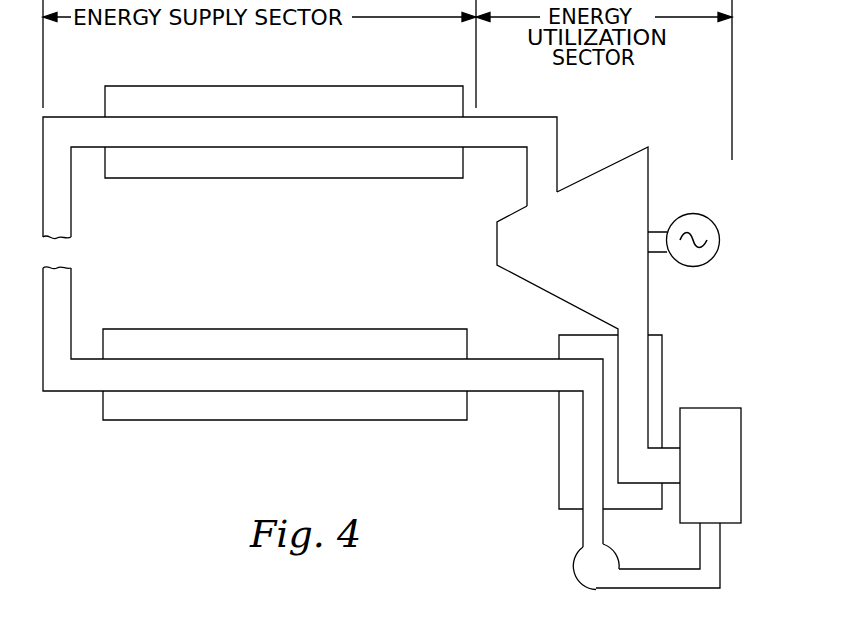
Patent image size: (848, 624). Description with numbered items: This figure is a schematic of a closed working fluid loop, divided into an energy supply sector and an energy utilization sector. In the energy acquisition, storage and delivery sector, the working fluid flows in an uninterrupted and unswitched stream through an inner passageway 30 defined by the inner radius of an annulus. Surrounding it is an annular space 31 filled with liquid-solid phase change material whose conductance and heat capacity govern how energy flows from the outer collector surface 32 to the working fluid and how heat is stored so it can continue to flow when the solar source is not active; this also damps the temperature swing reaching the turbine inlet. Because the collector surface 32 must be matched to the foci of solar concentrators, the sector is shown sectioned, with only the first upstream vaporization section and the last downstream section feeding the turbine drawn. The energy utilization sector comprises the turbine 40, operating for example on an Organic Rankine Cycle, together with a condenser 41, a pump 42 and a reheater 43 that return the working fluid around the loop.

The inner passageway 30 is at (77, 393).
The annular space 31 is at (235, 410).
The collector surface 32 is at (318, 418).
The turbine 40 is at (631, 152).
The condenser 41 is at (741, 448).
The pump 42 is at (572, 578).
The reheater 43 is at (559, 450).